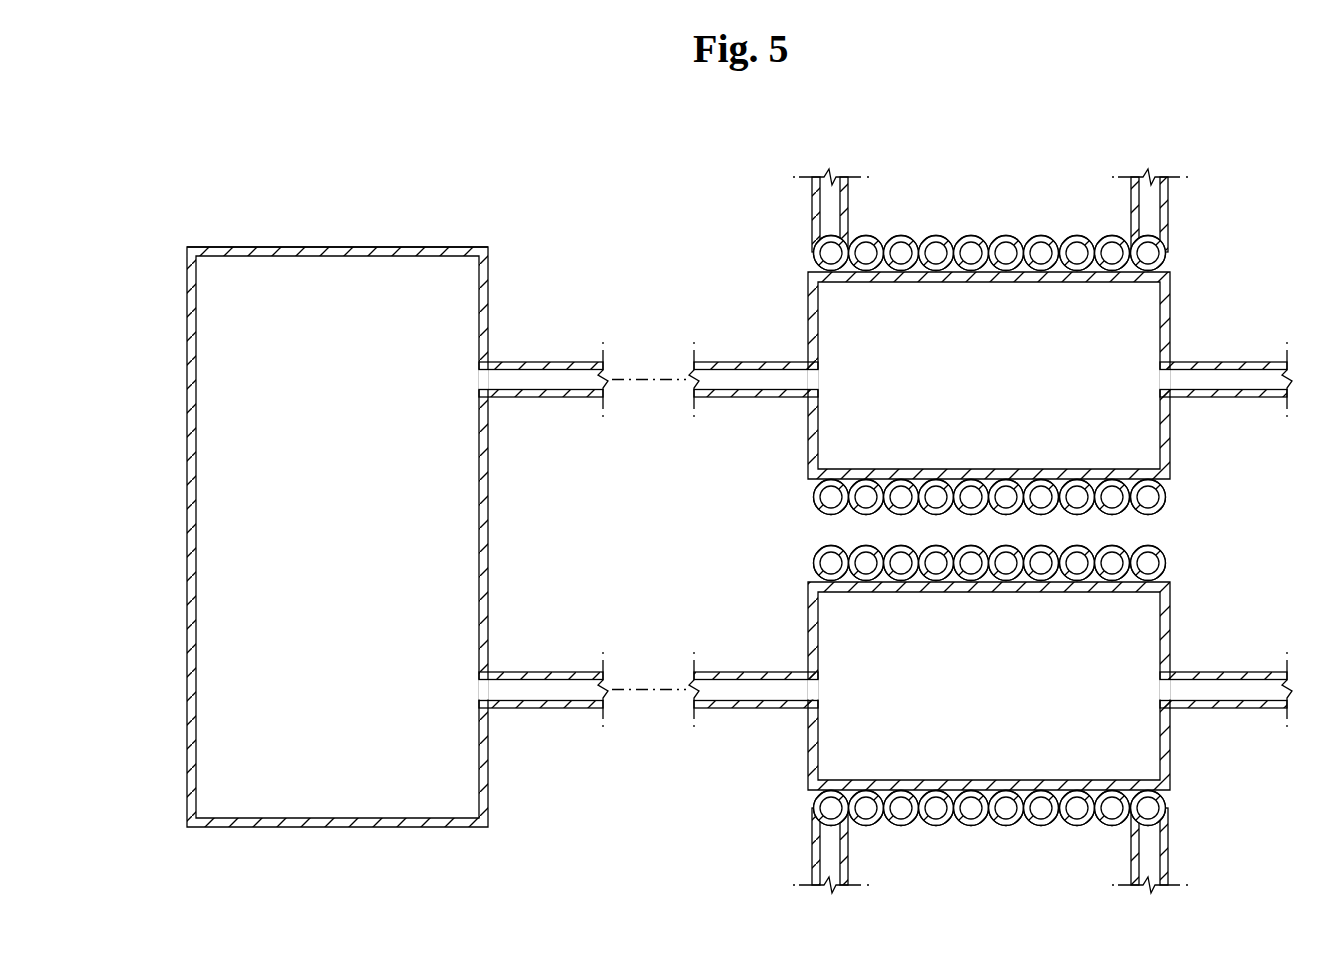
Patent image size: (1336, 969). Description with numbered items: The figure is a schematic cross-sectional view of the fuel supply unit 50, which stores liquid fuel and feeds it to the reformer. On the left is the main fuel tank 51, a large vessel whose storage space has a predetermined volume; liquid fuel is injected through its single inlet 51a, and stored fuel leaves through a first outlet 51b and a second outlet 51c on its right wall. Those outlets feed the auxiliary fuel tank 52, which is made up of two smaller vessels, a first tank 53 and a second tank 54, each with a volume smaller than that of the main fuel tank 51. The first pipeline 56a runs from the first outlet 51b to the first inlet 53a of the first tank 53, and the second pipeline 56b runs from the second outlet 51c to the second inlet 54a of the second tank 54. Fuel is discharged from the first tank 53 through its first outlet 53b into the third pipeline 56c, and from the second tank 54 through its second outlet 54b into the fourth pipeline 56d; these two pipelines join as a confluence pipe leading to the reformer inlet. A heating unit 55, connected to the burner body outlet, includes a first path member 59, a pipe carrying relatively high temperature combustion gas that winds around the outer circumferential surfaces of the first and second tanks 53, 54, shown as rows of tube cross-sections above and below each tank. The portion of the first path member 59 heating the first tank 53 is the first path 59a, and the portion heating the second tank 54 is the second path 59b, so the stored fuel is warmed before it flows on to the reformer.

The fuel supply unit 50 is at (755, 126).
The main fuel tank 51 is at (431, 237).
The inlet 51a is at (263, 235).
The first outlet 51b is at (483, 372).
The second outlet 51c is at (483, 682).
The auxiliary fuel tank 52 is at (1019, 531).
The first tank 53 is at (1193, 298).
The first inlet 53a is at (816, 384).
The first outlet 53b is at (1162, 384).
The second tank 54 is at (1193, 608).
The second inlet 54a is at (816, 694).
The second outlet 54b is at (1162, 694).
The heating unit 55 is at (790, 251).
The first pipeline 56a is at (570, 362).
The second pipeline 56b is at (570, 672).
The third pipeline 56c is at (1250, 362).
The fourth pipeline 56d is at (1250, 672).
The first path member 59 is at (990, 535).
The first path 59a is at (870, 237).
The second path 59b is at (870, 827).